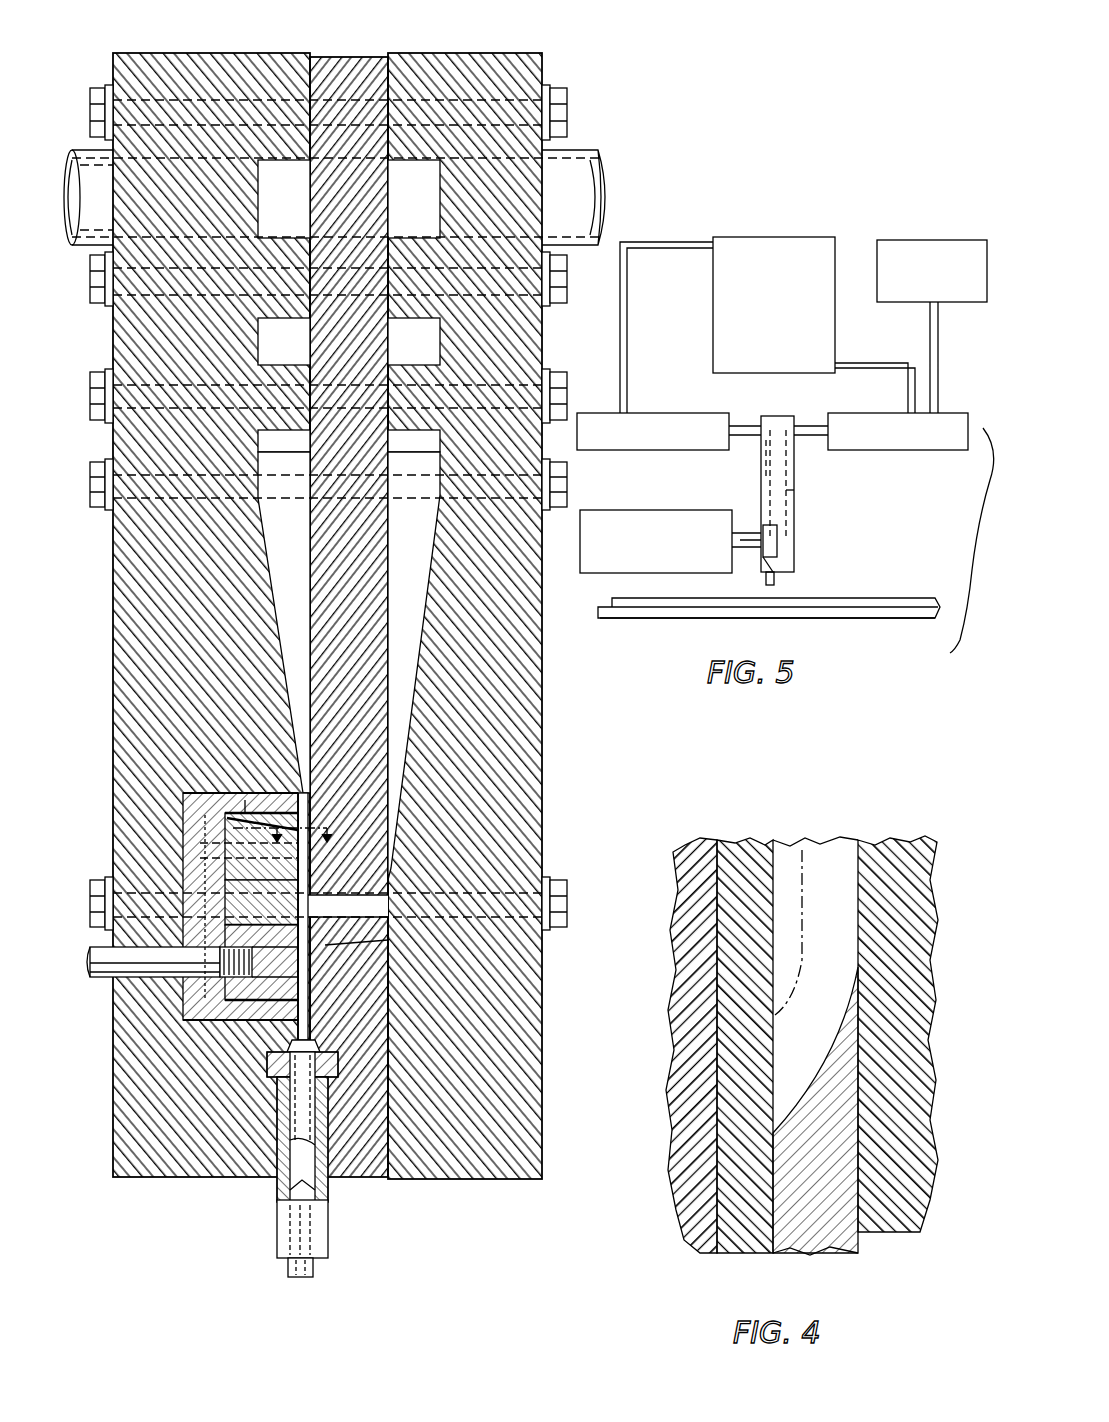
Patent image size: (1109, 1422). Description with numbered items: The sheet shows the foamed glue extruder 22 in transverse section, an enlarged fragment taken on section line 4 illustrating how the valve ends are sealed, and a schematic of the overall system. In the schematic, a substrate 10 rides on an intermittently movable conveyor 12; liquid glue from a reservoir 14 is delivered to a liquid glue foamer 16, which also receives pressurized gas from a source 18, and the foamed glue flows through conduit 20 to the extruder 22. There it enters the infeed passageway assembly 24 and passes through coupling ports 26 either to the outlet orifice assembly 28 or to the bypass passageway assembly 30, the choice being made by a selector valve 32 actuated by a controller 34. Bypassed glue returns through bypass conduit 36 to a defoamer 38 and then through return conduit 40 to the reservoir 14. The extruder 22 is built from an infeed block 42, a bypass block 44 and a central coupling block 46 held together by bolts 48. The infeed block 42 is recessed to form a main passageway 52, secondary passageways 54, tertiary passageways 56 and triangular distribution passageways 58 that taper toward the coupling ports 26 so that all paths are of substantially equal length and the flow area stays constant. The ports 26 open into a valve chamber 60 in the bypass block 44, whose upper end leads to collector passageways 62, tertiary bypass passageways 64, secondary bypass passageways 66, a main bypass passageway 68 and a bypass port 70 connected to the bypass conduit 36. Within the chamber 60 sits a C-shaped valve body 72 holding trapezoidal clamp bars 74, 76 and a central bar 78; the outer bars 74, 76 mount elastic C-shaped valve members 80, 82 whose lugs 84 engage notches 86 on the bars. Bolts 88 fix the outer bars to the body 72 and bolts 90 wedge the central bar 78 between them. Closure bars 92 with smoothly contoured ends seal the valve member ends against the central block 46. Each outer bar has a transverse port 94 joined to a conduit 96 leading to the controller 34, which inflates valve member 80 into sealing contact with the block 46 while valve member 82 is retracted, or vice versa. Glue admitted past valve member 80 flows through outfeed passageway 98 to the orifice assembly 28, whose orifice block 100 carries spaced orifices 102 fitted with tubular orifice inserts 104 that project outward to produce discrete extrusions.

In FIG. 1, the section line 4— 4 is at (289, 829).
In FIG. 5, the substrate 10 is at (885, 598).
In FIG. 5, the conveyor 12 is at (885, 618).
In FIG. 5, the reservoir 14 is at (785, 237).
In FIG. 5, the liquid glue foamer 16 is at (852, 413).
In FIG. 5, the source of gas supply 18 is at (930, 240).
In FIG. 1, the conduit 20 is at (585, 170).
In FIG. 5, the conduit 20 is at (812, 440).
In FIG. 5, the extruder 22 is at (770, 416).
In FIG. 5, the infeed passageway assembly 24 is at (790, 490).
In FIG. 1, the coupling ports 26 is at (330, 940).
In FIG. 5, the coupling ports 26 is at (780, 540).
In FIG. 1, the outlet orifice assembly 28 is at (375, 1260).
In FIG. 5, the outlet orifice assembly 28 is at (775, 583).
In FIG. 5, the bypass passageway assembly 30 is at (768, 478).
In FIG. 5, the selector valve 32 is at (760, 565).
In FIG. 5, the controller 34 is at (648, 510).
In FIG. 1, the bypass conduit 36 is at (95, 175).
In FIG. 5, the bypass conduit 36 is at (745, 440).
In FIG. 5, the defoamer 38 is at (666, 412).
In FIG. 5, the return conduit 40 is at (628, 300).
In FIG. 1, the infeed block 42 is at (500, 53).
In FIG. 1, the bypass block 44 is at (250, 53).
In FIG. 1, the central coupling block 46 is at (345, 70).
In FIG. 4, the central coupling block 46 is at (898, 895).
In FIG. 1, the bolts 48 is at (557, 928).
In FIG. 1, the main passageway 52 is at (426, 210).
In FIG. 1, the secondary passageway 54 is at (426, 354).
In FIG. 1, the tertiary passageway 56 is at (420, 451).
In FIG. 1, the distribution passageway 58 is at (424, 534).
In FIG. 1, the valve chamber 60 is at (310, 808).
In FIG. 4, the valve chamber 60 is at (823, 870).
In FIG. 1, the collector passageways 62 is at (300, 534).
In FIG. 1, the tertiary bypass passageways 64 is at (290, 451).
In FIG. 1, the secondary bypass passageways 66 is at (296, 354).
In FIG. 1, the main bypass passageway 68 is at (296, 210).
In FIG. 1, the bypass port 70 is at (125, 213).
In FIG. 1, the valve body 72 is at (210, 1005).
In FIG. 1, the clamp bar 74 is at (290, 1000).
In FIG. 1, the clamp bar 76 is at (290, 866).
In FIG. 4, the clamp bar 76 is at (705, 872).
In FIG. 1, the central clamp bar 78 is at (265, 930).
In FIG. 1, the valve member 80 is at (278, 1065).
In FIG. 1, the valve member 82 is at (265, 810).
In FIG. 4, the valve member 82 is at (745, 865).
In FIG. 1, the lugs 84 is at (225, 985).
In FIG. 1, the notches 86 is at (228, 1022).
In FIG. 1, the bolts 88 is at (205, 810).
In FIG. 1, the bolts 90 is at (195, 957).
In FIG. 4, the closure bars 92 is at (815, 1205).
In FIG. 1, the transverse port 94 is at (280, 980).
In FIG. 1, the conduit 96 is at (110, 980).
In FIG. 5, the conduit 96 is at (760, 532).
In FIG. 1, the outfeed passageway 98 is at (310, 1045).
In FIG. 1, the orifice block 100 is at (280, 1245).
In FIG. 1, the orifices 102 is at (290, 1185).
In FIG. 1, the tubular orifice inserts 104 is at (290, 1278).